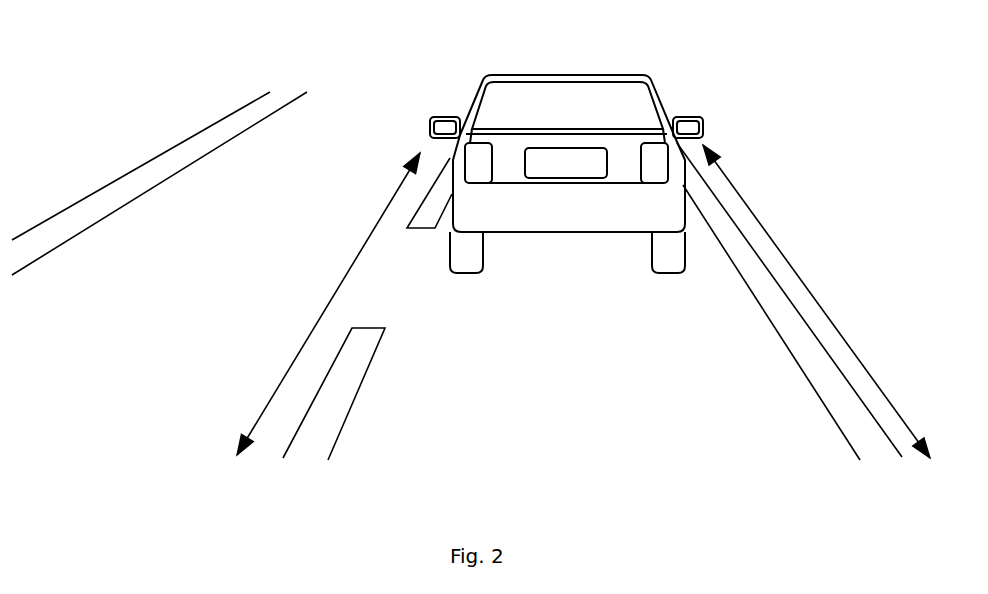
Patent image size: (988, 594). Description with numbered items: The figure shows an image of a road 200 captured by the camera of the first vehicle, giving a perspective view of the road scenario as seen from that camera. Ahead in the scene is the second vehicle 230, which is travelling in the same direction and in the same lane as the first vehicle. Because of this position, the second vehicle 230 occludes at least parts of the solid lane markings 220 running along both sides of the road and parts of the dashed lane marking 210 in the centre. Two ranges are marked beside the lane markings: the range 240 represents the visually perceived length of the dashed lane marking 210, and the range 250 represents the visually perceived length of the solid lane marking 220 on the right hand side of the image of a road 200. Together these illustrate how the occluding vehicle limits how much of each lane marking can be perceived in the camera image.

The image of a road 200 is at (232, 46).
The dashed lane marking 210 is at (338, 382).
The solid lane markings 220 is at (135, 178).
The second vehicle 230 is at (620, 105).
The range 240 is at (317, 323).
The range 250 is at (807, 285).